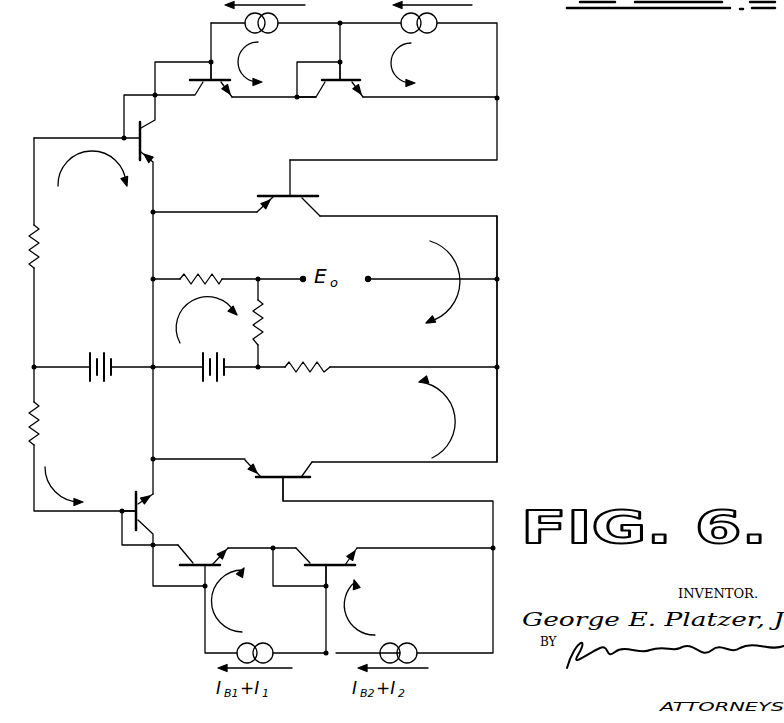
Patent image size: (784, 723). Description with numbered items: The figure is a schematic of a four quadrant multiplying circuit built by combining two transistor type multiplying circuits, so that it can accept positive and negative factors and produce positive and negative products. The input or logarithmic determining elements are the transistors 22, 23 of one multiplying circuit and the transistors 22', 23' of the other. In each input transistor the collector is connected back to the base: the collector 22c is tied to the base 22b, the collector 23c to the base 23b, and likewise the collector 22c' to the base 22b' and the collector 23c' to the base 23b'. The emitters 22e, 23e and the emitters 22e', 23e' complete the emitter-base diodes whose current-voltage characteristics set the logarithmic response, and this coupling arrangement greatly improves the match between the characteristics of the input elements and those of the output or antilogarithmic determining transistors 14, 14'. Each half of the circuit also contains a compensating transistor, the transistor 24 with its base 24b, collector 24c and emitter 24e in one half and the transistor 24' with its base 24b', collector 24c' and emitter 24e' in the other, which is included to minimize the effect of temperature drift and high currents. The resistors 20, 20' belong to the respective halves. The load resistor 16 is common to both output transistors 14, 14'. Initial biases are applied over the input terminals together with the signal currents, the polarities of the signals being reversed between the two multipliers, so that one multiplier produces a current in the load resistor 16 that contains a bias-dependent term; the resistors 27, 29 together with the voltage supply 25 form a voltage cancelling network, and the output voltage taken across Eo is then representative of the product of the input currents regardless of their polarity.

The output transistor 14 is at (278, 470).
The output transistor 14' is at (288, 196).
The load resistor 16 is at (302, 372).
The resistor 20 is at (58, 423).
The resistor 20' is at (63, 246).
The input transistor 22 is at (345, 570).
The input transistor 22' is at (349, 51).
The base of transistor 22 22b is at (302, 577).
The base of transistor 22' 22b' is at (320, 60).
The collector of transistor 22 22c is at (304, 540).
The collector of transistor 22' 22c' is at (312, 102).
The emitter of transistor 22 22e is at (365, 543).
The emitter of transistor 22' 22e' is at (364, 102).
The input transistor 23 is at (196, 578).
The input transistor 23' is at (218, 51).
The base of transistor 23 23b is at (235, 568).
The base of transistor 23' 23b' is at (181, 59).
The collector of transistor 23 23c is at (188, 548).
The collector of transistor 23' 23c' is at (184, 102).
The emitter of transistor 23 23e is at (235, 545).
The emitter of transistor 23' 23e' is at (245, 102).
The compensating transistor 24 is at (114, 515).
The compensating transistor 24' is at (125, 141).
The base of transistor 24 24b is at (112, 495).
The base of transistor 24' 24b' is at (107, 119).
The collector of transistor 24 24c is at (170, 529).
The collector of transistor 24' 24c' is at (175, 118).
The emitter of transistor 24 24e is at (171, 501).
The emitter of transistor 24' 24e' is at (176, 176).
The voltage supply 25 is at (196, 395).
The resistor 27 is at (261, 321).
The resistor 29 is at (199, 273).